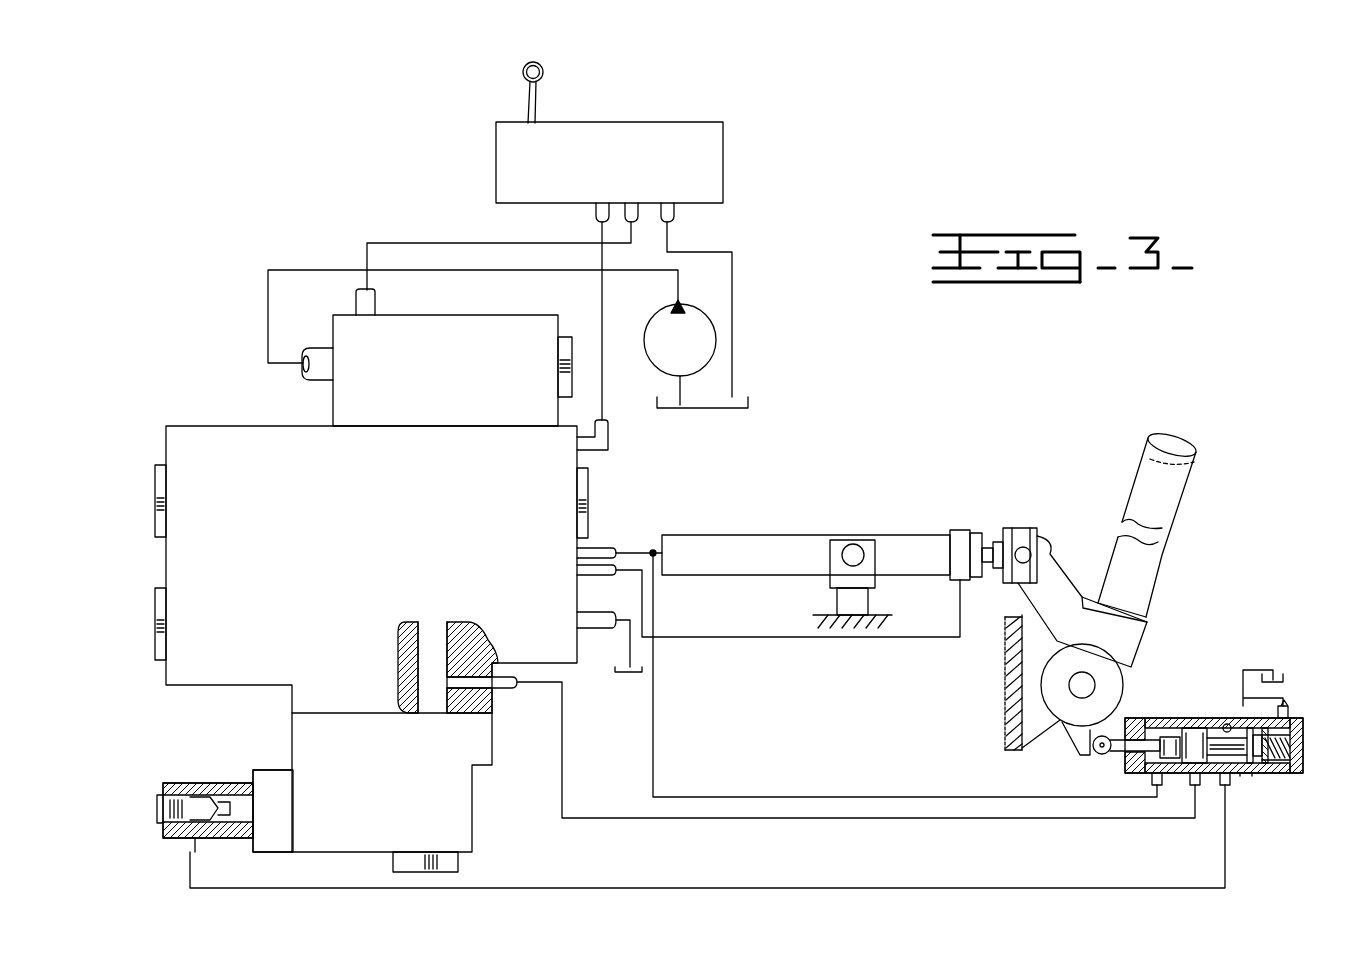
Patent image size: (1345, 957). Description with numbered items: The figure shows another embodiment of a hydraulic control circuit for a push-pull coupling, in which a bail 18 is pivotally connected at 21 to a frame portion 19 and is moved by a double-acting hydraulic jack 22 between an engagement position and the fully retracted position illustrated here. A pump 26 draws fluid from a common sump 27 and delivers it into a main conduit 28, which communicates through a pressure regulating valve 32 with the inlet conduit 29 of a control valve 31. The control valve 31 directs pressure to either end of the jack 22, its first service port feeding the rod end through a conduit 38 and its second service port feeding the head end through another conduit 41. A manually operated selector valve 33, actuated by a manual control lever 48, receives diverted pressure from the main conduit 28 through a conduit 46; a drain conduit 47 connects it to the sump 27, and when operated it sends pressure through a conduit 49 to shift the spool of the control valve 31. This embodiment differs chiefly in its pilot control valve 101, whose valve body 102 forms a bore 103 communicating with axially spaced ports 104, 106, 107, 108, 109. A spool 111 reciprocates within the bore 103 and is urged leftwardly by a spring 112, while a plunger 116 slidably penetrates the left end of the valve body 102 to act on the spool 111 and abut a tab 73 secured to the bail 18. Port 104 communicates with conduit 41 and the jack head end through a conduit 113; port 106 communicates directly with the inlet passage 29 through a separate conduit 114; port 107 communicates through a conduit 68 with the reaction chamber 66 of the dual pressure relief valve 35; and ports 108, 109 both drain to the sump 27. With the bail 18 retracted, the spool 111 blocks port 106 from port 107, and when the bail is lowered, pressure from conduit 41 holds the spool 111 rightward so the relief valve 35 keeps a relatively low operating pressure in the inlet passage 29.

The manual control lever 48 is at (538, 100).
The selector valve 33 is at (728, 168).
The conduit 46 is at (468, 243).
The drain conduit 47 is at (732, 290).
The conduit 49 is at (602, 292).
The main conduit 28 is at (292, 270).
The pump 26 is at (700, 356).
The common sump 27 is at (695, 410).
The pressure regulating valve 32 is at (438, 318).
The control valve 31 is at (208, 415).
The inlet conduit 29 is at (430, 642).
The dual pressure relief valve 35 is at (250, 767).
The reaction chamber 66 is at (188, 838).
The conduit 68 is at (858, 888).
The conduit 41 is at (630, 550).
The conduit 113 is at (806, 782).
The conduit 38 is at (688, 637).
The conduit 114 is at (584, 782).
The double-acting hydraulic jack 22 is at (750, 535).
The bail 18 is at (1172, 490).
The pivotal connection 21 is at (1082, 685).
The frame portion 19 is at (1030, 665).
The tab 73 is at (1075, 742).
The pilot control valve 101 is at (1310, 765).
The plunger 116 is at (1165, 745).
The spool 111 is at (1190, 738).
The bore 103 is at (1240, 728).
The port 108 is at (1240, 715).
The spring 112 is at (1256, 772).
The port 104 is at (1150, 780).
The inlet port 106 is at (1193, 785).
The outlet port 107 is at (1222, 785).
The valve body 102 is at (1250, 776).
The port 109 is at (1285, 712).